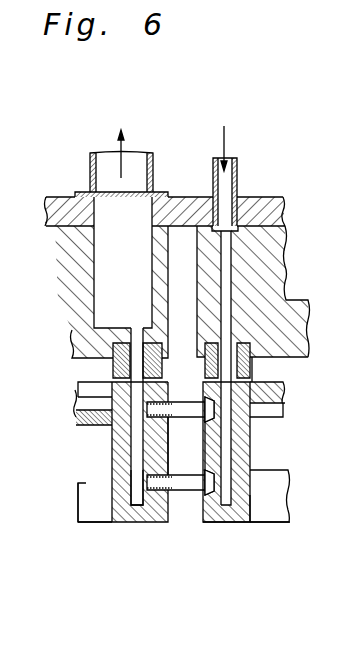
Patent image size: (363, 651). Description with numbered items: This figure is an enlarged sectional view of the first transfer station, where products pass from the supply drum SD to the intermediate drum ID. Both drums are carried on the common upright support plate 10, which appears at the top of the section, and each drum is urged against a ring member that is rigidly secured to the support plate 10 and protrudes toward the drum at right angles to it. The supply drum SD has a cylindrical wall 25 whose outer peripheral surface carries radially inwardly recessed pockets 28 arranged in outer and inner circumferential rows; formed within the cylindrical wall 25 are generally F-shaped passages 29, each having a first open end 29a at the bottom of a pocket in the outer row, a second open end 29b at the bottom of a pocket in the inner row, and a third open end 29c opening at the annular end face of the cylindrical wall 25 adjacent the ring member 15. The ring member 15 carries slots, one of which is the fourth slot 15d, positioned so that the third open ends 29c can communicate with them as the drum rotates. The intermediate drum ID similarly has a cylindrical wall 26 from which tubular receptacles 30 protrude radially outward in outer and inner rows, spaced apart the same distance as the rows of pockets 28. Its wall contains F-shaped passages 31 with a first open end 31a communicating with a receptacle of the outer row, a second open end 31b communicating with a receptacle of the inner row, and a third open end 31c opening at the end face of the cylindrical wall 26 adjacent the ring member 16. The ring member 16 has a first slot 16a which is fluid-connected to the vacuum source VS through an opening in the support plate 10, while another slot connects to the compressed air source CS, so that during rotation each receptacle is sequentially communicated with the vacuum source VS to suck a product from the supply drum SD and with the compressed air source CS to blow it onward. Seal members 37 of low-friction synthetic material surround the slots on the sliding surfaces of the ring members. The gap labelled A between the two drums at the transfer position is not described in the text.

The common upright support plate 10 is at (282, 200).
The vacuum source VS is at (132, 160).
The compressed air source CS is at (224, 143).
The ring member 15 is at (307, 294).
The fourth slot 15d is at (232, 266).
The ring member 16 is at (70, 302).
The first slot 16a is at (137, 333).
The seal members 37 is at (112, 362).
The third open end 31c is at (112, 376).
The second open end 31b is at (112, 402).
The F-shaped passage 31 is at (141, 455).
The tubular receptacle 30 is at (184, 424).
The first open end 31a is at (137, 478).
The cylindrical wall 26 is at (78, 497).
The intermediate drum ID is at (88, 515).
The pockets 28 is at (252, 415).
The gap A is at (193, 490).
The F-shaped passage 29 is at (232, 442).
The third open end 29c is at (253, 367).
The second open end 29b is at (283, 398).
The cylindrical wall 25 is at (252, 471).
The first open end 29a is at (253, 502).
The supply drum SD is at (253, 524).